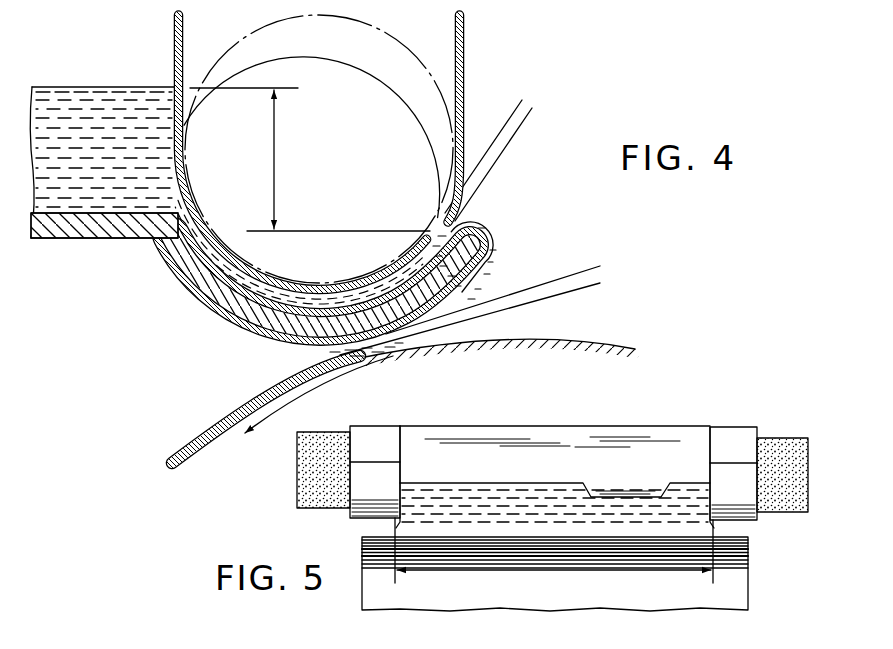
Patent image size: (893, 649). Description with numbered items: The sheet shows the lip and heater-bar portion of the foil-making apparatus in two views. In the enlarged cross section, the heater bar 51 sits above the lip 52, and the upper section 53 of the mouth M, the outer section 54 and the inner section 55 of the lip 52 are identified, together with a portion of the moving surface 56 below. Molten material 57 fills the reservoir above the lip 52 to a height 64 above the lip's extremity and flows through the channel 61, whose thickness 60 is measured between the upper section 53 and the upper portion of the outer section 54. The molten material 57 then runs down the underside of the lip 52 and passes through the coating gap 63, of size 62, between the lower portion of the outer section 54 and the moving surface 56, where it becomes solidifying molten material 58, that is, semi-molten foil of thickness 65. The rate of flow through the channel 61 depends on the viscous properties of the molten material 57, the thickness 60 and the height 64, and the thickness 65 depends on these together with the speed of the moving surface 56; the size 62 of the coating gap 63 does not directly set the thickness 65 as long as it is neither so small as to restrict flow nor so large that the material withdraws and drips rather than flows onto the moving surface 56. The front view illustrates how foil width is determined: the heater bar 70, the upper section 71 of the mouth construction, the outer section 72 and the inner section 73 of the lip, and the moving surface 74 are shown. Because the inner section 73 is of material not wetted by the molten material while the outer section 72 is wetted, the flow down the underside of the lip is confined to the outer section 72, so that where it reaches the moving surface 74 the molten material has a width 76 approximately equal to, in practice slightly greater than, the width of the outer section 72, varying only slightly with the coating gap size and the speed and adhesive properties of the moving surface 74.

In FIG. 4, the heater bar 51 is at (394, 34).
In FIG. 4, the lip 52 is at (498, 258).
In FIG. 4, the upper section of the mouth 53 is at (467, 66).
In FIG. 4, the outer section of the lip 54 is at (243, 332).
In FIG. 4, the inner section of the lip 55 is at (404, 316).
In FIG. 4, the moving surface 56 is at (528, 346).
In FIG. 4, the molten material 57 is at (98, 86).
In FIG. 4, the solidifying molten material 58 is at (226, 416).
In FIG. 4, the thickness of the channel 60 is at (481, 104).
In FIG. 4, the channel 61 is at (338, 298).
In FIG. 4, the size of the coating gap 62 is at (588, 236).
In FIG. 4, the coating gap 63 is at (353, 357).
In FIG. 4, the height of molten material 64 is at (282, 161).
In FIG. 4, the thickness of solidifying molten material 65 is at (214, 482).
In FIG. 4, the mouth M is at (460, 216).
In FIG. 5, the heater bar 70 is at (790, 440).
In FIG. 5, the upper section of the mouth construction 71 is at (520, 434).
In FIG. 5, the outer section of the lip 72 is at (627, 489).
In FIG. 5, the inner section of the lip 73 is at (364, 506).
In FIG. 5, the moving surface 74 is at (732, 586).
In FIG. 5, the width of the molten material 76 is at (562, 570).